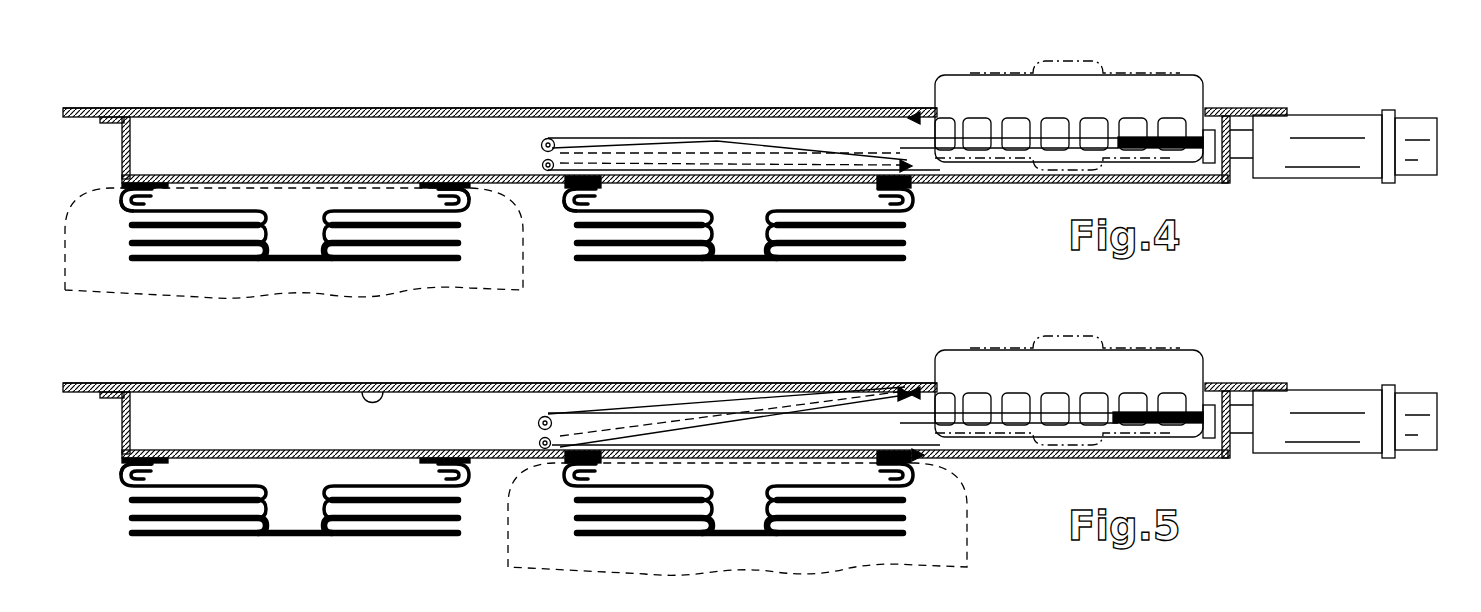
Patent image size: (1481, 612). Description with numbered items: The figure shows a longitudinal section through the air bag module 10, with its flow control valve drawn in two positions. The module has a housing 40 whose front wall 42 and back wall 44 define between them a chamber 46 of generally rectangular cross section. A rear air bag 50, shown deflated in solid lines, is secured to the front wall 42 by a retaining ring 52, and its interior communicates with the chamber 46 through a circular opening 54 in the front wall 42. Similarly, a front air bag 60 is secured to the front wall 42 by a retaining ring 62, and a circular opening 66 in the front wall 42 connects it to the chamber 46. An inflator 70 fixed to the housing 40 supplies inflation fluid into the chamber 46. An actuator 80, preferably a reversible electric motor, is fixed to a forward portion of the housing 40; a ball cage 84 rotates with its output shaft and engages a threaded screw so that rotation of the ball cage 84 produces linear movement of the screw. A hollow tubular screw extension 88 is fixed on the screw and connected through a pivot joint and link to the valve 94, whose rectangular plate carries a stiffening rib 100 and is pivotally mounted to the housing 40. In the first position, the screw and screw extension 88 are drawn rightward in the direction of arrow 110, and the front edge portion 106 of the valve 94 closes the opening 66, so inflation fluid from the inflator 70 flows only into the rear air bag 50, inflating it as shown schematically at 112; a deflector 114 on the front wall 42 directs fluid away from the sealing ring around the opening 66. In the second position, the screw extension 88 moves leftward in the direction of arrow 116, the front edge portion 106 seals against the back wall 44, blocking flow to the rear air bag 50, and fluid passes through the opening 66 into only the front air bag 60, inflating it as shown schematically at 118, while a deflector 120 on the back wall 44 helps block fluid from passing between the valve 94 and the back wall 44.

In FIG. 4, the air bag module 10 is at (1210, 205).
In FIG. 5, the air bag module 10 is at (1336, 526).
In FIG. 4, the housing 40 is at (341, 100).
In FIG. 5, the housing 40 is at (675, 497).
In FIG. 4, the front wall 42 is at (968, 183).
In FIG. 5, the front wall 42 is at (675, 439).
In FIG. 4, the back wall 44 is at (882, 109).
In FIG. 5, the back wall 44 is at (500, 408).
In FIG. 4, the chamber 46 is at (177, 137).
In FIG. 5, the chamber 46 is at (530, 395).
In FIG. 4, the rear air bag 50 is at (180, 264).
In FIG. 5, the rear air bag 50 is at (295, 521).
In FIG. 4, the retaining ring 52 is at (150, 202).
In FIG. 4, the circular opening 54 is at (434, 180).
In FIG. 5, the circular opening 54 is at (180, 442).
In FIG. 4, the front air bag 60 is at (667, 262).
In FIG. 5, the front air bag 60 is at (721, 491).
In FIG. 4, the retaining ring 62 is at (597, 193).
In FIG. 4, the circular opening 66 is at (720, 182).
In FIG. 4, the inflator 70 is at (1205, 96).
In FIG. 5, the inflator 70 is at (1097, 384).
In FIG. 4, the actuator 80 is at (1310, 112).
In FIG. 5, the actuator 80 is at (1333, 401).
In FIG. 4, the ball cage 84 is at (1212, 136).
In FIG. 5, the ball cage 84 is at (1180, 472).
In FIG. 4, the screw extension 88 is at (600, 137).
In FIG. 5, the screw extension 88 is at (829, 390).
In FIG. 4, the valve 94 is at (780, 150).
In FIG. 5, the valve 94 is at (730, 393).
In FIG. 5, the stiffening rib 100 is at (403, 374).
In FIG. 5, the front edge portion 106 is at (978, 358).
In FIG. 4, the arrow 110 is at (752, 83).
In FIG. 4, the inflated rear air bag 112 is at (260, 300).
In FIG. 4, the deflector 114 is at (940, 182).
In FIG. 5, the arrow 116 is at (578, 336).
In FIG. 5, the inflated front air bag 118 is at (737, 536).
In FIG. 4, the deflector 120 is at (940, 118).
In FIG. 5, the deflector 120 is at (1055, 375).